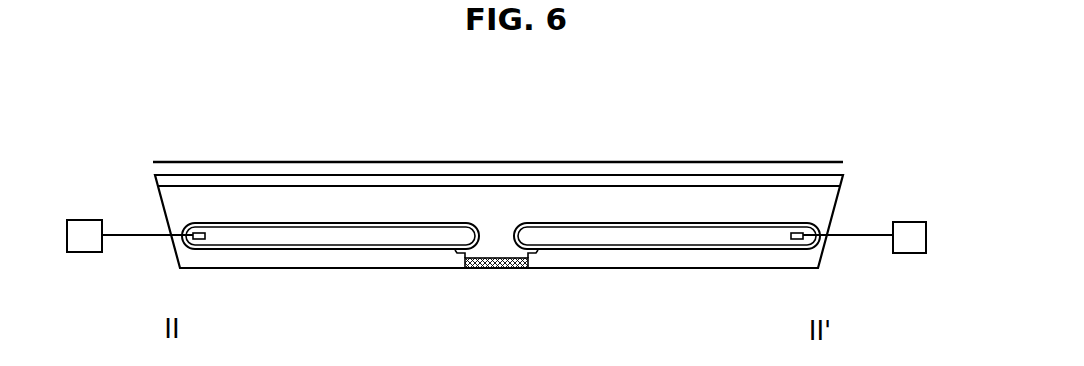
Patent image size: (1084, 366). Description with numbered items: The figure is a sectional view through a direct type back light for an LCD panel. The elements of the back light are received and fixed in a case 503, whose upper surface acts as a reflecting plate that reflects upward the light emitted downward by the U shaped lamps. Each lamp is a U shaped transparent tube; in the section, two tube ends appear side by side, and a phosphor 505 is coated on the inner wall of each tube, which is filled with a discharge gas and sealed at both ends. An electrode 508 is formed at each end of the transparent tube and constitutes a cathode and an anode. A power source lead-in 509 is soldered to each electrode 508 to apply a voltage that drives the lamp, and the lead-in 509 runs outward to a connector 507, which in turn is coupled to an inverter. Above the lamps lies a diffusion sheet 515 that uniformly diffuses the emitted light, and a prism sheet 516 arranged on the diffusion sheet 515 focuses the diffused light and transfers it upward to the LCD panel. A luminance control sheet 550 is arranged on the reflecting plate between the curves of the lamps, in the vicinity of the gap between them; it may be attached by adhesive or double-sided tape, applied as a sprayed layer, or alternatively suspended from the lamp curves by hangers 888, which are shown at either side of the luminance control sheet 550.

The case 503 is at (714, 268).
The phosphor 505 is at (622, 245).
The connector 507 is at (83, 243).
The electrode 508 is at (197, 239).
The power source lead-in 509 is at (135, 235).
The diffusion sheet 515 is at (840, 183).
The prism sheet 516 is at (798, 162).
The luminance control sheet 550 is at (492, 268).
The hanger 888 is at (457, 255).